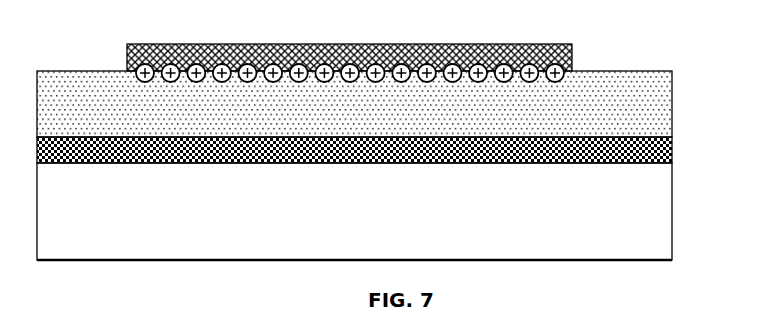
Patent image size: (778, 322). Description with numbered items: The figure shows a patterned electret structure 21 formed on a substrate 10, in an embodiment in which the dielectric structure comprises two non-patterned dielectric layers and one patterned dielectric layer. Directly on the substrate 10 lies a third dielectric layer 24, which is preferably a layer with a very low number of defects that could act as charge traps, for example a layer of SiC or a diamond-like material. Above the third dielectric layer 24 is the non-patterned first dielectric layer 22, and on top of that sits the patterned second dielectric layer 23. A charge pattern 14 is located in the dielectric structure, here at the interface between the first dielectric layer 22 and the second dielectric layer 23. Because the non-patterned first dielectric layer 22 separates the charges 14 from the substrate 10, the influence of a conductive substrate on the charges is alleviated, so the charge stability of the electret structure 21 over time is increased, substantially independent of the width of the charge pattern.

The substrate 10 is at (354, 211).
The charge pattern 14 is at (132, 69).
The electret structure 21 is at (388, 100).
The first dielectric layer 22 is at (354, 104).
The second dielectric layer 23 is at (566, 49).
The third dielectric layer 24 is at (388, 152).